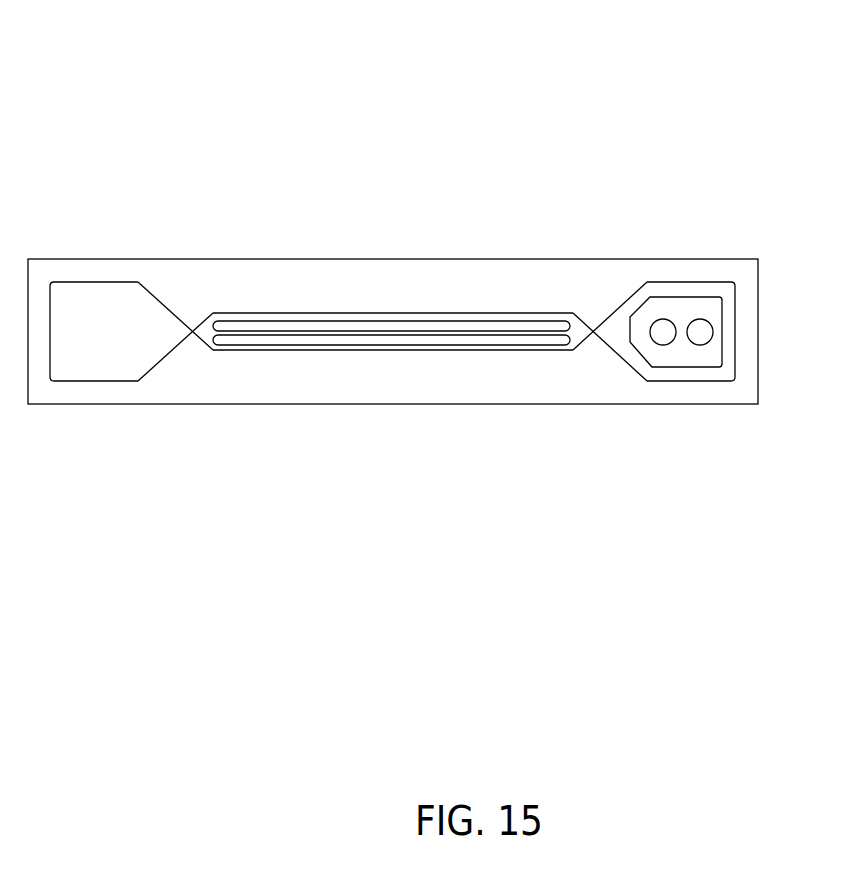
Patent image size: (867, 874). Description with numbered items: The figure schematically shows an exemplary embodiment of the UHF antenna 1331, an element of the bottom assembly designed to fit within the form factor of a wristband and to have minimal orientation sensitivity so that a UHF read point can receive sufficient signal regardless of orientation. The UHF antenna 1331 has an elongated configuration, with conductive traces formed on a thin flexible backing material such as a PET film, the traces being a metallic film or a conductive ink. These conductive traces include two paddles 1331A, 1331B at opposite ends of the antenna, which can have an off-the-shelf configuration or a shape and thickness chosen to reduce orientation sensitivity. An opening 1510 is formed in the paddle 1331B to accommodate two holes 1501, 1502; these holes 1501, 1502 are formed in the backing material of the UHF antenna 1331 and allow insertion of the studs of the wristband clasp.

The UHF antenna 1331 is at (280, 112).
The paddle 1331A is at (113, 382).
The paddle 1331B is at (620, 358).
The hole 1501 is at (663, 332).
The hole 1502 is at (700, 332).
The opening 1510 is at (538, 312).